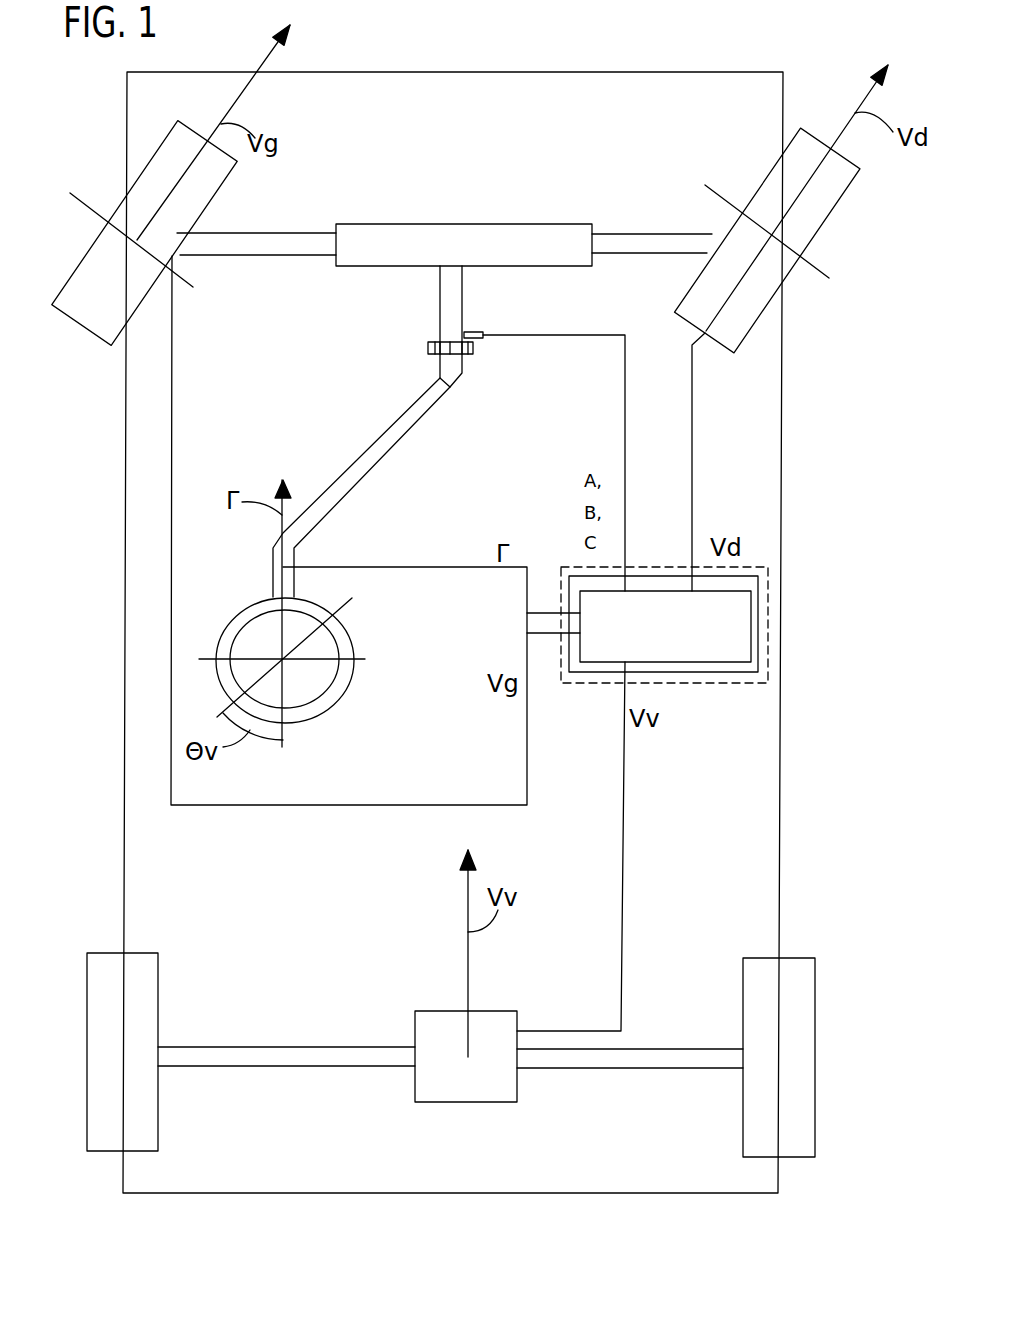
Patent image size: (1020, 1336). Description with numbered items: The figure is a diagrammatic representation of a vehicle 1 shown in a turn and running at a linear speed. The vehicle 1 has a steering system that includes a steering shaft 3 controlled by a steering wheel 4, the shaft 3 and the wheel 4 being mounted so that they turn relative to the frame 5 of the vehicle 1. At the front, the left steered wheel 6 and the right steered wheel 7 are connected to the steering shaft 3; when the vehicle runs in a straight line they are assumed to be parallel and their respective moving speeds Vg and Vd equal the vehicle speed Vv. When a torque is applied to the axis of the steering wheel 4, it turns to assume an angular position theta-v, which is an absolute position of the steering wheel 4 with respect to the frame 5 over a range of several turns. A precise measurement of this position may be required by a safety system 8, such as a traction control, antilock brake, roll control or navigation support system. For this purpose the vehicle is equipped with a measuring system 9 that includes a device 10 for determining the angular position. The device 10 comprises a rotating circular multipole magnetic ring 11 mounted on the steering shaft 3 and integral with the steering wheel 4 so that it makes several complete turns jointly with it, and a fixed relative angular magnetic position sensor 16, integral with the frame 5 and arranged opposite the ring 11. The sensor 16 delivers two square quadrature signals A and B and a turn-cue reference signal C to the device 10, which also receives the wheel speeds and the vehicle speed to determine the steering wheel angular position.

The vehicle 1 is at (491, 632).
The frame 5 is at (782, 437).
The steering shaft 3 is at (438, 300).
The steering wheel 4 is at (338, 695).
The left steered wheel 6 is at (138, 173).
The right steered wheel 7 is at (825, 222).
The safety system 8 is at (770, 642).
The measuring system 9 is at (758, 592).
The determination device 10 is at (723, 662).
The multipole magnetic ring 11 is at (428, 355).
The relative angular magnetic position sensor 16 is at (476, 331).